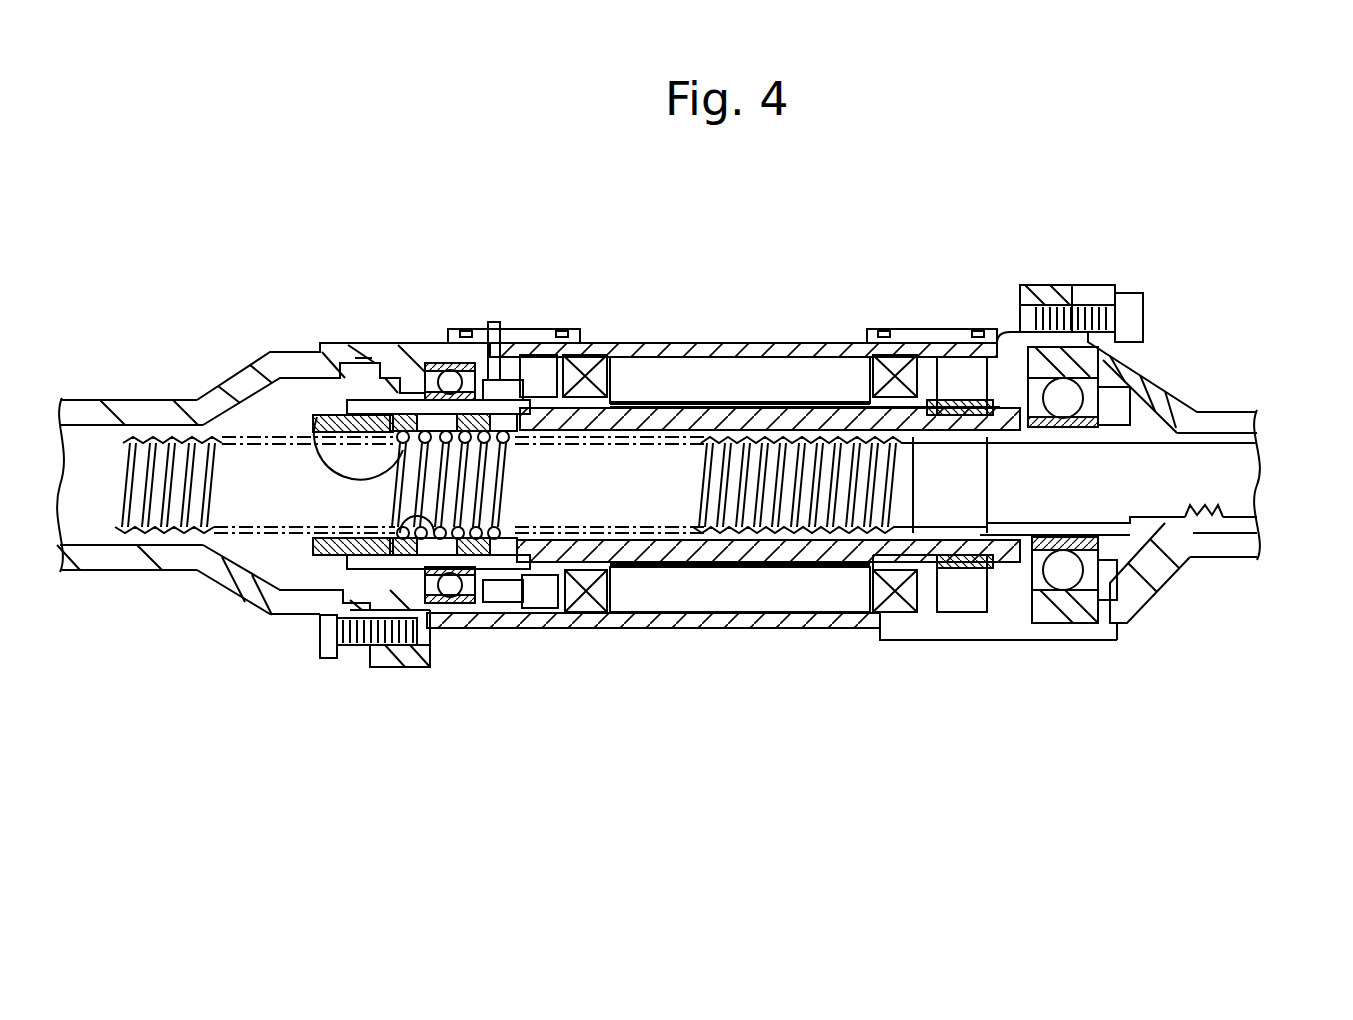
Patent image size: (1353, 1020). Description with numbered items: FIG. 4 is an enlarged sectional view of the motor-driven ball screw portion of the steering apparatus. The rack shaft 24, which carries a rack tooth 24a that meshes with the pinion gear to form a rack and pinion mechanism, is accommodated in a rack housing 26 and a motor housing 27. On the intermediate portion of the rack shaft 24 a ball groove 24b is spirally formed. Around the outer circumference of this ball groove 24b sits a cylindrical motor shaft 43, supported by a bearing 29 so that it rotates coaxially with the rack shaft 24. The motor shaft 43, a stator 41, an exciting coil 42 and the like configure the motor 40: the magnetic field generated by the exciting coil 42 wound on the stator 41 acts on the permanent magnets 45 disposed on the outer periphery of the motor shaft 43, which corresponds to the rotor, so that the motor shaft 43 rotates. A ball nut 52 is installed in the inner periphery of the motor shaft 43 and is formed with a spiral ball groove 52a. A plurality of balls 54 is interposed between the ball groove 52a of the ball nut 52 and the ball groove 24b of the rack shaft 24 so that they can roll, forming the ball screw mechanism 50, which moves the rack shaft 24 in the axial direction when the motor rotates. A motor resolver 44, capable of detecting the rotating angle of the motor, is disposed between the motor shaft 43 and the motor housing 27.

The rack shaft 24 is at (90, 507).
The rack tooth 24a is at (1190, 510).
The ball groove 24b is at (205, 500).
The rack housing 26 is at (240, 367).
The motor housing 27 is at (835, 343).
The bearing 29 is at (455, 590).
The motor 40 is at (790, 340).
The stator 41 is at (673, 373).
The exciting coil 42 is at (585, 358).
The motor shaft 43 is at (677, 553).
The motor resolver 44 is at (967, 593).
The permanent magnets 45 is at (740, 400).
The ball screw mechanism 50 is at (398, 393).
The ball nut 52 is at (490, 405).
The ball groove 52a is at (333, 443).
The balls 54 is at (453, 390).